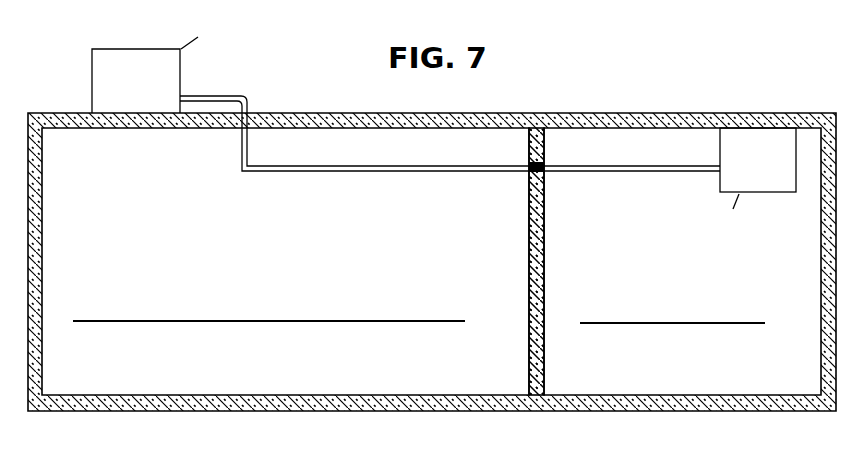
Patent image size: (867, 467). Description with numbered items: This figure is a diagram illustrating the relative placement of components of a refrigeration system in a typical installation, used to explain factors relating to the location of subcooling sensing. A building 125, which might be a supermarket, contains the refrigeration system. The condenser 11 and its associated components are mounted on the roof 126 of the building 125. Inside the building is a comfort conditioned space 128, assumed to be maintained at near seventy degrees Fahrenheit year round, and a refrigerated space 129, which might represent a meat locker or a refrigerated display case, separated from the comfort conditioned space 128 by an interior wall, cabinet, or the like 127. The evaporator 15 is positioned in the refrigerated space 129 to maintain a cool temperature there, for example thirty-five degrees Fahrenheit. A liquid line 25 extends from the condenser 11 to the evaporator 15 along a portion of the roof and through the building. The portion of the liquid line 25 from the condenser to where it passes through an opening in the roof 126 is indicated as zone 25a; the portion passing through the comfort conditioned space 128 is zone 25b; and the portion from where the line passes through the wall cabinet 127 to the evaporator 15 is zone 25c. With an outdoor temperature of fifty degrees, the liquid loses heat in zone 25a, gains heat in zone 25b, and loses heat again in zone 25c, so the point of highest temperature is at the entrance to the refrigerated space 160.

The condenser 11 is at (130, 62).
The evaporator 15 is at (757, 148).
The liquid line 25 is at (450, 145).
The liquid line portion from condenser to roof opening 25a is at (227, 96).
The liquid line portion in comfort conditioned space 25b is at (306, 172).
The liquid line portion from wall cabinet to evaporator 25c is at (604, 173).
The building 125 is at (432, 226).
The roof 126 is at (322, 112).
The interior wall or cabinet 127 is at (528, 262).
The comfort conditioned space 128 is at (281, 281).
The refrigerated space 129 is at (682, 259).
The entrance to the refrigerated space 160 is at (530, 172).